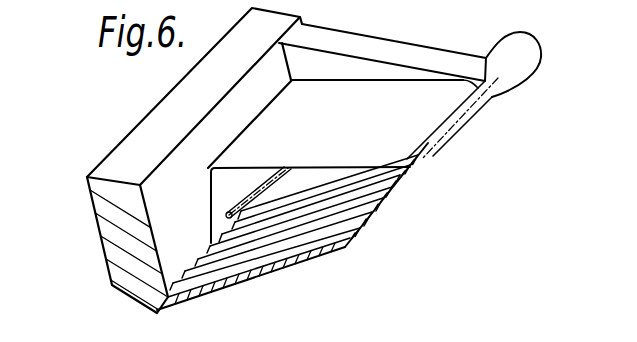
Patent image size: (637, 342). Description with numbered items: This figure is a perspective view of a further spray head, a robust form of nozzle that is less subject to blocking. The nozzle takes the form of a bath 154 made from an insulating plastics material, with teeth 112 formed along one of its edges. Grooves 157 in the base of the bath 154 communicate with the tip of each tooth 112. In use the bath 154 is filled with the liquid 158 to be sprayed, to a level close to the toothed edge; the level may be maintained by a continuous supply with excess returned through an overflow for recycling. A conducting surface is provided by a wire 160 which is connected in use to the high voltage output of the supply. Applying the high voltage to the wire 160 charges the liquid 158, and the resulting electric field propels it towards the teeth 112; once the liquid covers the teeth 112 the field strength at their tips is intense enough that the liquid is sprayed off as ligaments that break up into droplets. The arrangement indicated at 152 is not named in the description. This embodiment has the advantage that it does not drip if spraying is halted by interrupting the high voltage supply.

The teeth 112 is at (368, 209).
The stepped assembly 152 is at (422, 183).
The bath 154 is at (122, 248).
The grooves 157 is at (278, 258).
The liquid 158 is at (430, 105).
The wire 160 is at (236, 204).